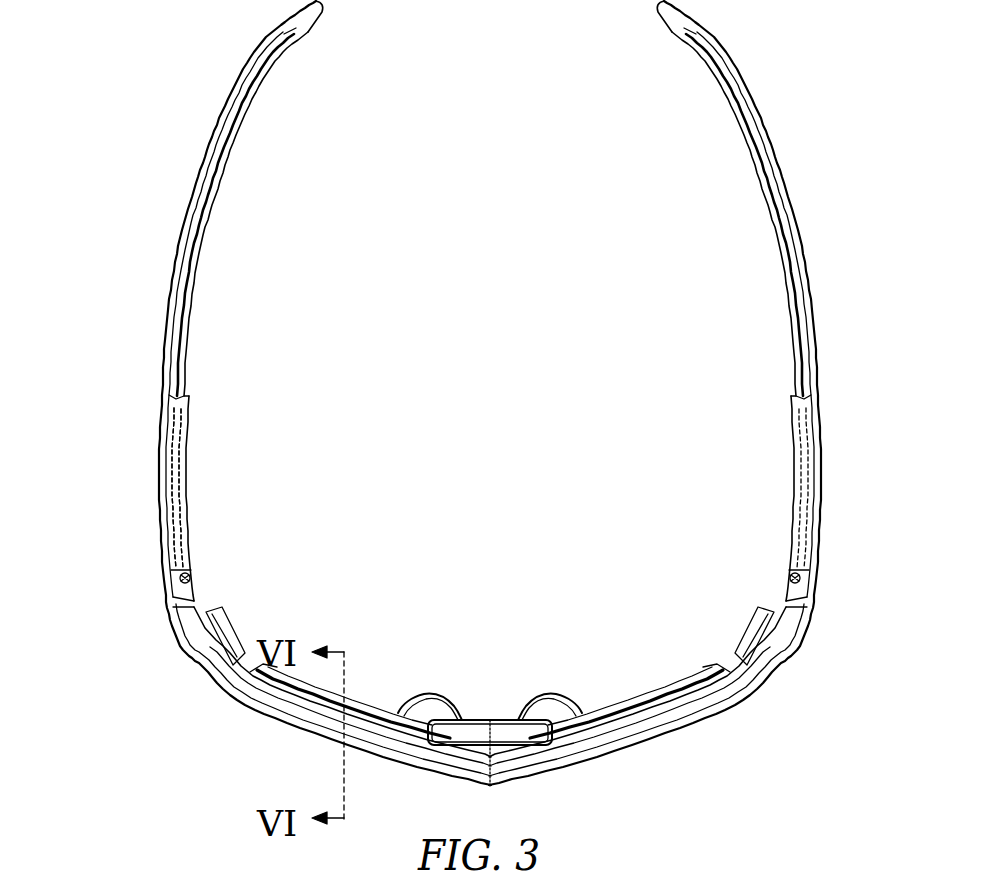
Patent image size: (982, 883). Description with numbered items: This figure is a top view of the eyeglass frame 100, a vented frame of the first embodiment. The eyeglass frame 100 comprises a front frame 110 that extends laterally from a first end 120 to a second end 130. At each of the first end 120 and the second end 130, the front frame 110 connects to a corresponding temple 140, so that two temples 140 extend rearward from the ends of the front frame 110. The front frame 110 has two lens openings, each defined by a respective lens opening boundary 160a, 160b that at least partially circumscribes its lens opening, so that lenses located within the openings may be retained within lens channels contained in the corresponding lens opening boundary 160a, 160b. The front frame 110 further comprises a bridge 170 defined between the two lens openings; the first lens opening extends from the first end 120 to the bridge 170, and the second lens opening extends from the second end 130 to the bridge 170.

The eyeglass frame 100 is at (439, 409).
The front frame 110 is at (381, 718).
The first end 120 is at (176, 630).
The second end 130 is at (810, 628).
The temple 140 is at (178, 457).
The first lens opening boundary 160a is at (292, 729).
The second lens opening boundary 160b is at (666, 740).
The bridge 170 is at (516, 762).